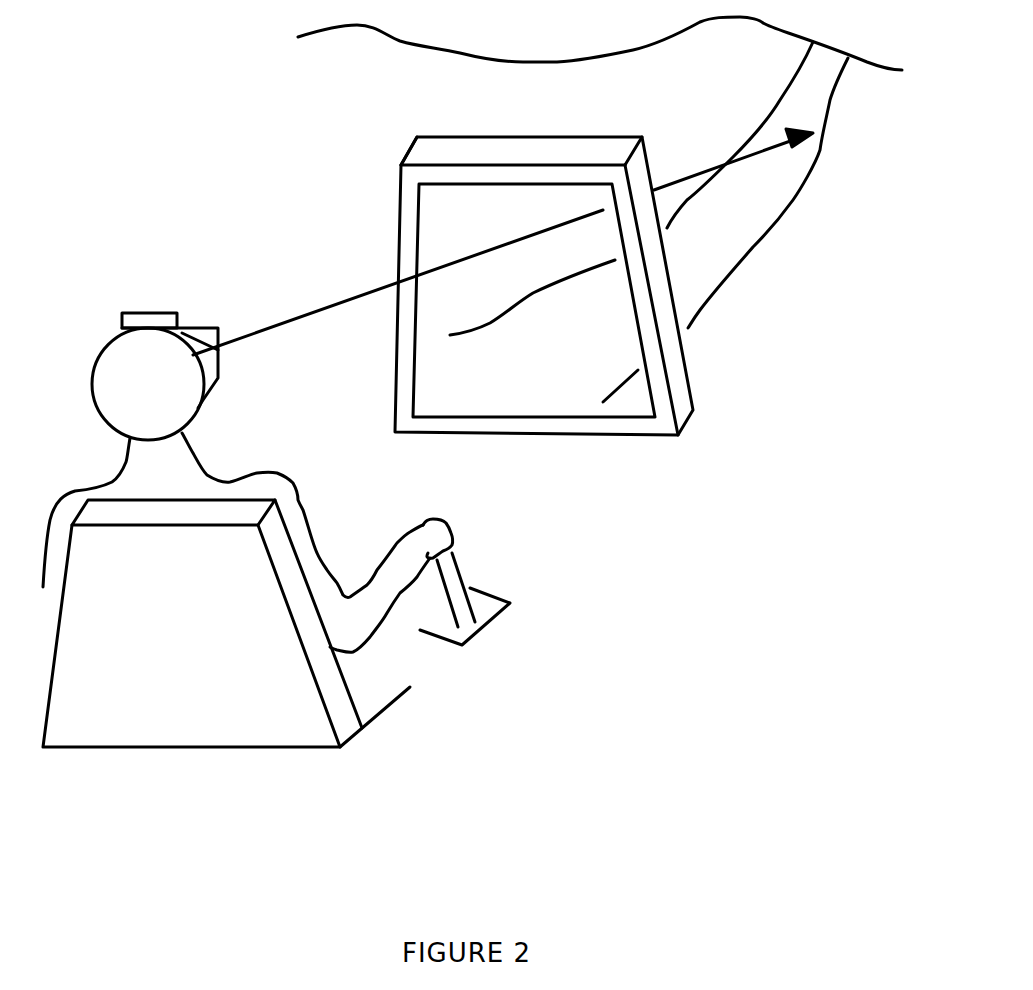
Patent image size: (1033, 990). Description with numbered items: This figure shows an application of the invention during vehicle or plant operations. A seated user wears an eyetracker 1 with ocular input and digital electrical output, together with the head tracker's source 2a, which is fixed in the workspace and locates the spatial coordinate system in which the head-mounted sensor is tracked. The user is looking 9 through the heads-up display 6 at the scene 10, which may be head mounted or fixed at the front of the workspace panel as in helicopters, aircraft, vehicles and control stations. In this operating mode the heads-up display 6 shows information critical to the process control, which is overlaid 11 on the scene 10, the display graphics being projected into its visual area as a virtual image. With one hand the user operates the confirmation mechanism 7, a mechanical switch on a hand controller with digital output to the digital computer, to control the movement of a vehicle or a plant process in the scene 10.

The eyetracker 1 is at (213, 303).
The source 2a is at (147, 312).
The heads-up display 6 is at (386, 170).
The confirmation mechanism 7 is at (450, 532).
The looking 9 is at (700, 170).
The scene 10 is at (529, 234).
The overlaid information 11 is at (498, 193).